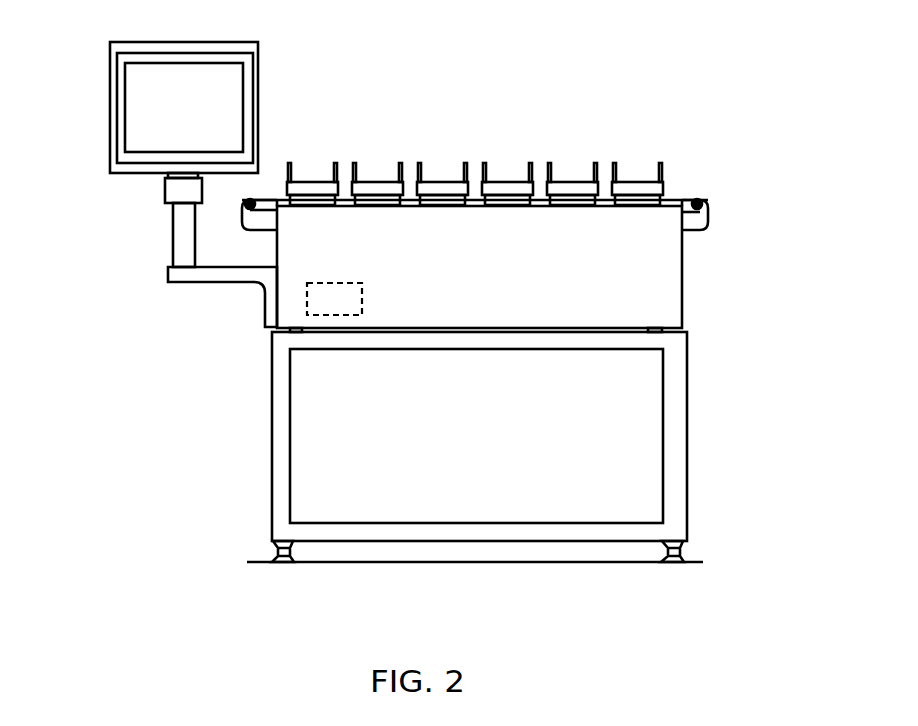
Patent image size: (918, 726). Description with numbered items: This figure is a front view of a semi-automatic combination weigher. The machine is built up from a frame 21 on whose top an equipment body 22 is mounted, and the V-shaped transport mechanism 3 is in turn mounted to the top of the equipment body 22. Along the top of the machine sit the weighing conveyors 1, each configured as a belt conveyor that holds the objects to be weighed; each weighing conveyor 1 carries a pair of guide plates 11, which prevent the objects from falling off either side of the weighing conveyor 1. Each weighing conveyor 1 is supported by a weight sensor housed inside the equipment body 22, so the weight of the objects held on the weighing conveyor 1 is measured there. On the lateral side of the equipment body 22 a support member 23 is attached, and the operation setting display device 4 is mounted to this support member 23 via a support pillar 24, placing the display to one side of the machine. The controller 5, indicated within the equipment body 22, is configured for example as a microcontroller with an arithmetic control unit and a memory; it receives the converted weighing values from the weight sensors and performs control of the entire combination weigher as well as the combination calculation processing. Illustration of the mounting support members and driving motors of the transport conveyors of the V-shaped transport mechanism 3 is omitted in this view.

The weighing conveyor 1 is at (640, 182).
The guide plates 11 is at (615, 163).
The V-shaped transport mechanism 3 is at (705, 200).
The operation setting display device 4 is at (108, 104).
The controller 5 is at (307, 300).
The frame 21 is at (688, 437).
The equipment body 22 is at (683, 293).
The support member 23 is at (183, 283).
The support pillar 24 is at (173, 237).